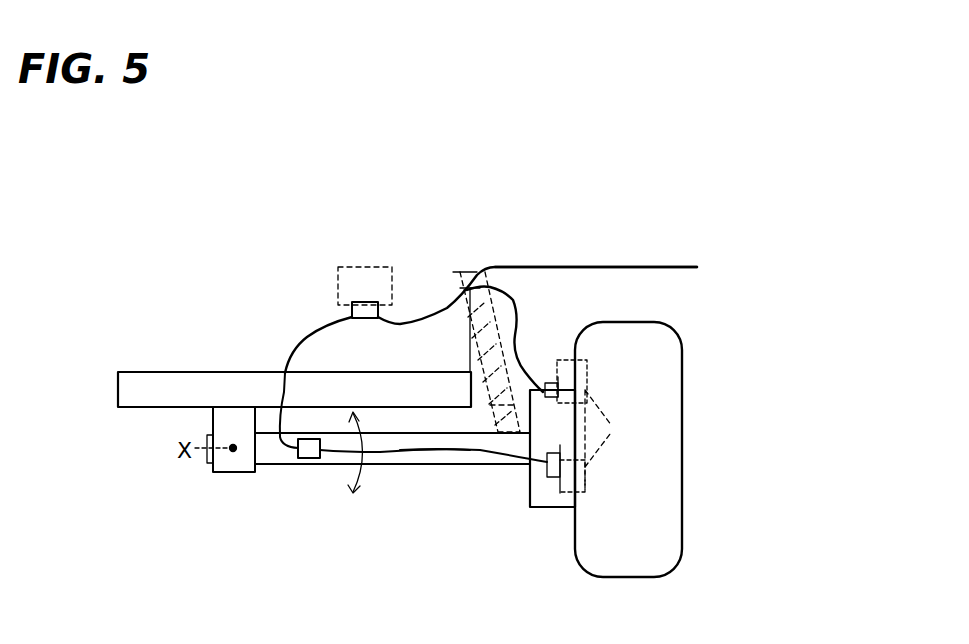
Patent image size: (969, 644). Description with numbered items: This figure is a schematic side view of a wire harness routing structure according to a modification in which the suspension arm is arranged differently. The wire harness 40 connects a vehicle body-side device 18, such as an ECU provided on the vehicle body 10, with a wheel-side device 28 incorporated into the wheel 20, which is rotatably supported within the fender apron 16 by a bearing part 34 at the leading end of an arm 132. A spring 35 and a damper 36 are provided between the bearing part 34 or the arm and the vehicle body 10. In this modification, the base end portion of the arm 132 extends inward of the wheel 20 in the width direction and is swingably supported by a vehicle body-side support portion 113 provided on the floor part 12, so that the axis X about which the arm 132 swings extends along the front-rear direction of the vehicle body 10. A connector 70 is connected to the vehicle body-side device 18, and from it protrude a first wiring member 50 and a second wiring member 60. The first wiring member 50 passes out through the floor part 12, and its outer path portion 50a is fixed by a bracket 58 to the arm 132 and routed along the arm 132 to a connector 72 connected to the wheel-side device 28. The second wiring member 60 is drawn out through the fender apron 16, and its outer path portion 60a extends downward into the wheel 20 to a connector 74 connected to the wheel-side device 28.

The vehicle body 10 is at (129, 410).
The floor part 12 is at (143, 371).
The fender apron 16 is at (565, 272).
The vehicle body-side device 18 is at (365, 266).
The wheel 20 is at (665, 328).
The wheel-side device 28 is at (615, 440).
The bearing part 34 is at (530, 488).
The spring 35 is at (474, 262).
The damper 36 is at (458, 262).
The wire harness 40 is at (310, 332).
The first wiring member 50 is at (288, 358).
The outer path portion 50a is at (432, 453).
The bracket 58 is at (308, 460).
The second wiring member 60 is at (417, 317).
The outer path portion 60a is at (518, 313).
The connector 70 is at (350, 308).
The connector 72 is at (551, 480).
The connector 74 is at (590, 362).
The vehicle body-side support portion 113 is at (233, 473).
The arm 132 is at (383, 466).